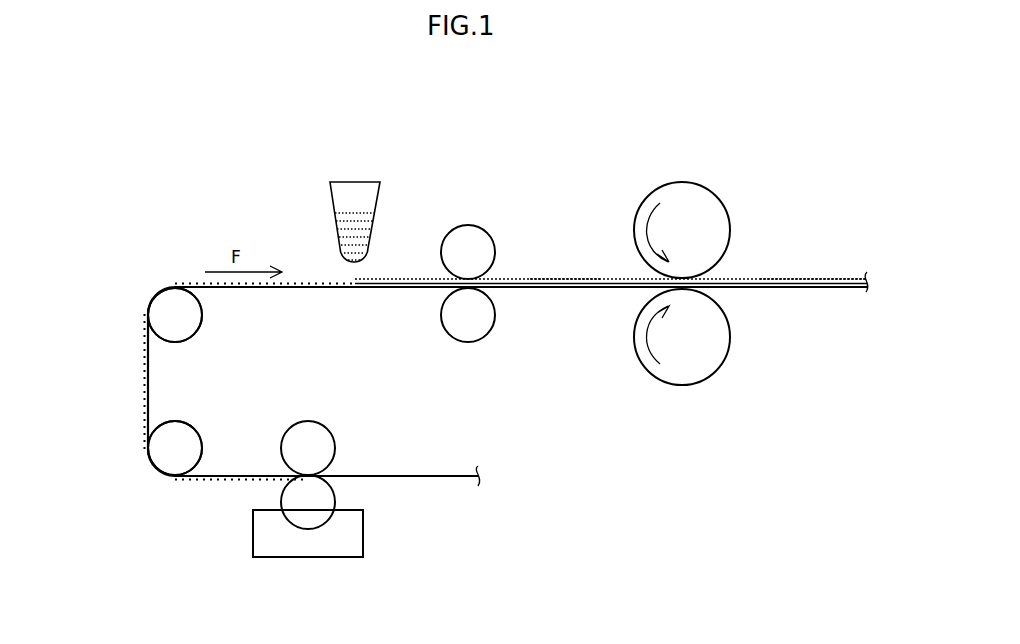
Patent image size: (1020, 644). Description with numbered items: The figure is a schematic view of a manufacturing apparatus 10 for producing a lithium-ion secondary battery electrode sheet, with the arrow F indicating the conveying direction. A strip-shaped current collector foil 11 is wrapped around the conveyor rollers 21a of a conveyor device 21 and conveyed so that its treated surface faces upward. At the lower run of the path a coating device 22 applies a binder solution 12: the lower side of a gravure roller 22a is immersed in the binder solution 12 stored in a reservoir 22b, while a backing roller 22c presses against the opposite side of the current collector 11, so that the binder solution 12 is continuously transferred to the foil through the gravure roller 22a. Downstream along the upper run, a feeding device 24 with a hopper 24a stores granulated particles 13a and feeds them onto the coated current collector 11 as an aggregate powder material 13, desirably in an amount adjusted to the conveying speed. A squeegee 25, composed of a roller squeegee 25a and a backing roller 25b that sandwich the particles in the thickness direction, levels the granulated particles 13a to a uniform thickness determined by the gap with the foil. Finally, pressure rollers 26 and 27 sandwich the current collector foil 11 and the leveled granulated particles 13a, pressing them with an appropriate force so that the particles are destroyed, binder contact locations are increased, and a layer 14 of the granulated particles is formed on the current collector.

The manufacturing apparatus 10 is at (220, 172).
The current collector foil 11 is at (415, 475).
The binder solution 12 is at (135, 418).
The powder material 13 is at (398, 272).
The granulated particle 13a is at (536, 280).
The layer of granulated particles 14 is at (796, 272).
The conveyor device 21 is at (160, 275).
The conveyor roller 21a is at (200, 320).
The coating device 22 is at (315, 477).
The gravure roller 22a is at (330, 522).
The reservoir 22b is at (253, 535).
The backing roller 22c is at (320, 425).
The feeding device 24 is at (321, 179).
The hopper 24a is at (335, 232).
The squeegee 25 is at (507, 240).
The roller squeegee 25a is at (484, 233).
The backing roller 25b is at (493, 330).
The pressure roller 26 is at (718, 198).
The pressure roller 27 is at (730, 346).